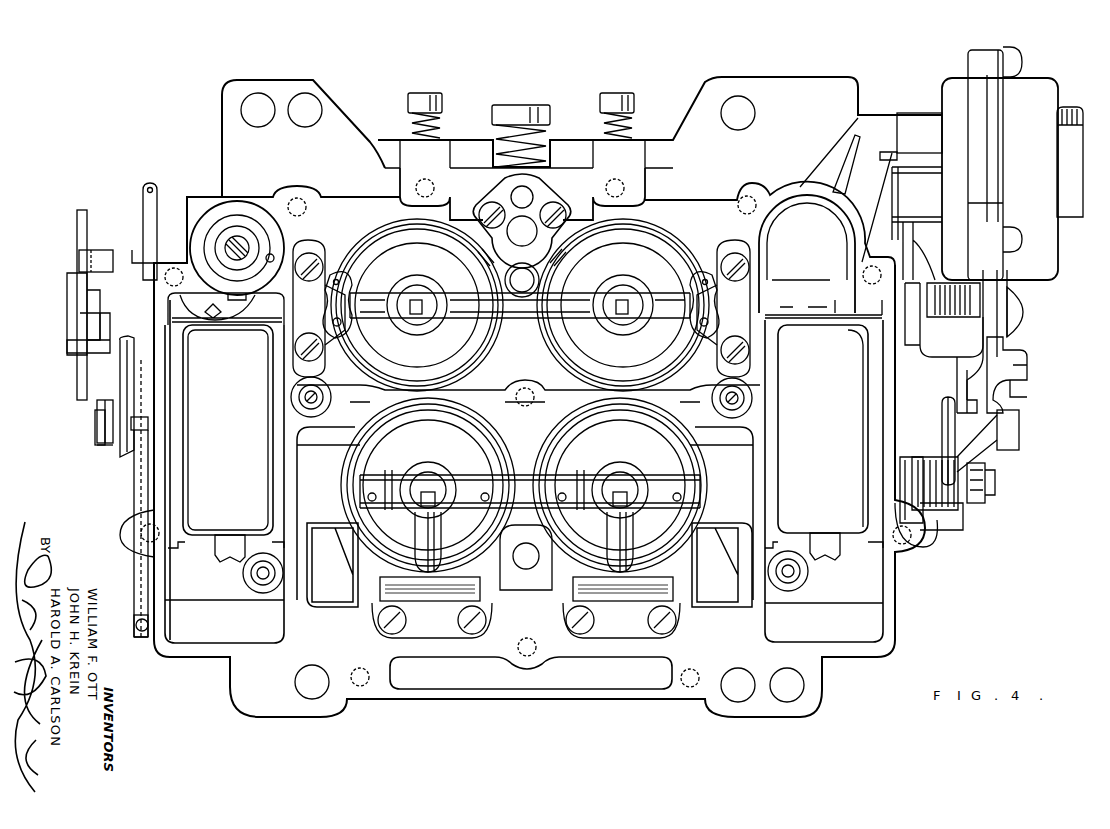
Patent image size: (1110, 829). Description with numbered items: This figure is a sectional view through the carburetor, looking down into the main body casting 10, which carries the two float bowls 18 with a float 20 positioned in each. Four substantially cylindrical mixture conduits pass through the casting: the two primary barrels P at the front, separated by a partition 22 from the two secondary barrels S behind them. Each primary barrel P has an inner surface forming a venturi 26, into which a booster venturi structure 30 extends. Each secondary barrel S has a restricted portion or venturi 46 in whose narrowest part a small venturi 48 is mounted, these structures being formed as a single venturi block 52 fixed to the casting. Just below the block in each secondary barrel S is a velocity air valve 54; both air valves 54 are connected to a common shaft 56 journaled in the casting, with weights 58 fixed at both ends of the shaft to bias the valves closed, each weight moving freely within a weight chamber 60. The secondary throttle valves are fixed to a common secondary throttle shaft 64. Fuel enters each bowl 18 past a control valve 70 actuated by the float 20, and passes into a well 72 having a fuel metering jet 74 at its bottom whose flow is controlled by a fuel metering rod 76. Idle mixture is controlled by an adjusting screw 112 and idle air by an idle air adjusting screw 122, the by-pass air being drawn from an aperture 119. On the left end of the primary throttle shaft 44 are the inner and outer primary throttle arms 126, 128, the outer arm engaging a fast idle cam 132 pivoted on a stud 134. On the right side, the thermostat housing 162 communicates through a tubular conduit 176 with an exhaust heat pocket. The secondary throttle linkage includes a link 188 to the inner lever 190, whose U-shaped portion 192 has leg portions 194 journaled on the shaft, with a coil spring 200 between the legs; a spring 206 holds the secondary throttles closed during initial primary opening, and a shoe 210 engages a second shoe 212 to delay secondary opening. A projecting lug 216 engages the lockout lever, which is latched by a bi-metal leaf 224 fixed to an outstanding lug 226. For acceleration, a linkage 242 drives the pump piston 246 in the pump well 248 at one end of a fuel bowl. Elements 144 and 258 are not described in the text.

The main body casting 10 is at (896, 586).
The float bowl 18 is at (180, 508).
The float 20 is at (226, 442).
The partition 22 is at (468, 390).
The venturi 26 is at (425, 357).
The booster venturi structure 30 is at (412, 285).
The primary throttle shaft 44 is at (50, 328).
The venturi 46 is at (508, 463).
The small venturi 48 is at (425, 462).
The venturi block 52 is at (392, 634).
The velocity air valve 54 is at (428, 438).
The shaft 56 is at (385, 490).
The weight 58 is at (325, 605).
The weight chamber 60 is at (299, 460).
The secondary throttle shaft 64 is at (986, 495).
The control valve 70 is at (245, 580).
The well 72 is at (328, 425).
The fuel metering jet 74 is at (295, 405).
The fuel metering rod 76 is at (300, 390).
The adjusting screw 112 is at (418, 92).
The aperture 119 is at (522, 284).
The idle air adjusting screw 122 is at (556, 100).
The inner primary throttle arm 126 is at (76, 220).
The outer primary throttle arm 128 is at (68, 345).
The fast idle cam 132 is at (96, 402).
The stud 134 is at (96, 428).
The lever 144 is at (128, 362).
The thermostat housing 162 is at (1040, 90).
The tubular conduit 176 is at (1067, 107).
The link 188 is at (941, 430).
The inner lever 190 is at (958, 390).
The U-shaped portion 192 is at (935, 350).
The leg portion 194 is at (952, 283).
The coil spring 200 is at (962, 312).
The spring 206 is at (918, 462).
The shoe 210 is at (1013, 400).
The second shoe 212 is at (1020, 432).
The projecting lug 216 is at (148, 462).
The bi-metal leaf 224 is at (125, 565).
The outstanding lug 226 is at (153, 655).
The linkage 242 is at (134, 206).
The pump piston 246 is at (248, 245).
The well 248 is at (275, 258).
The block 258 is at (108, 249).
The primary barrel P is at (425, 252).
The secondary barrel S is at (485, 542).